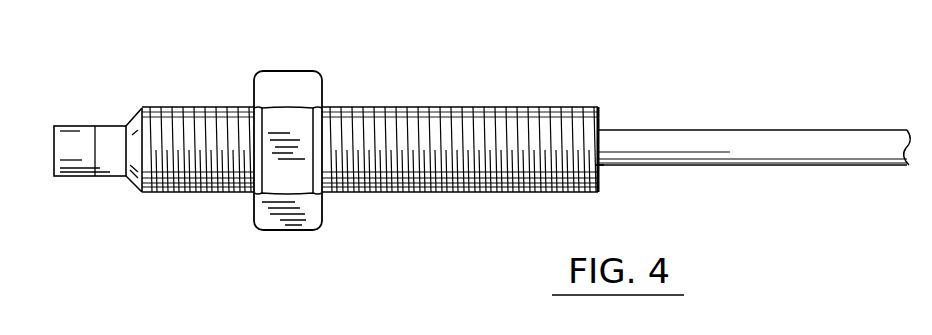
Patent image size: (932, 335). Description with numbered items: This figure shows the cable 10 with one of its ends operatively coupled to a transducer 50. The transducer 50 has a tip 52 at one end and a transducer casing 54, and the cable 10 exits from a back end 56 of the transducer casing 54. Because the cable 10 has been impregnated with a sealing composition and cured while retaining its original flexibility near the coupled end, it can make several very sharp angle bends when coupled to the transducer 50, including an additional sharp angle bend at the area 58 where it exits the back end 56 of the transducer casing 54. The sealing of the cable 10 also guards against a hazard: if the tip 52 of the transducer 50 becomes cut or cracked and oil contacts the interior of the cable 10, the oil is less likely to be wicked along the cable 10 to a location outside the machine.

The cable 10 is at (790, 110).
The transducer 50 is at (197, 70).
The tip 52 is at (72, 125).
The transducer casing 54 is at (443, 110).
The back end 56 is at (600, 114).
The area 58 is at (605, 170).